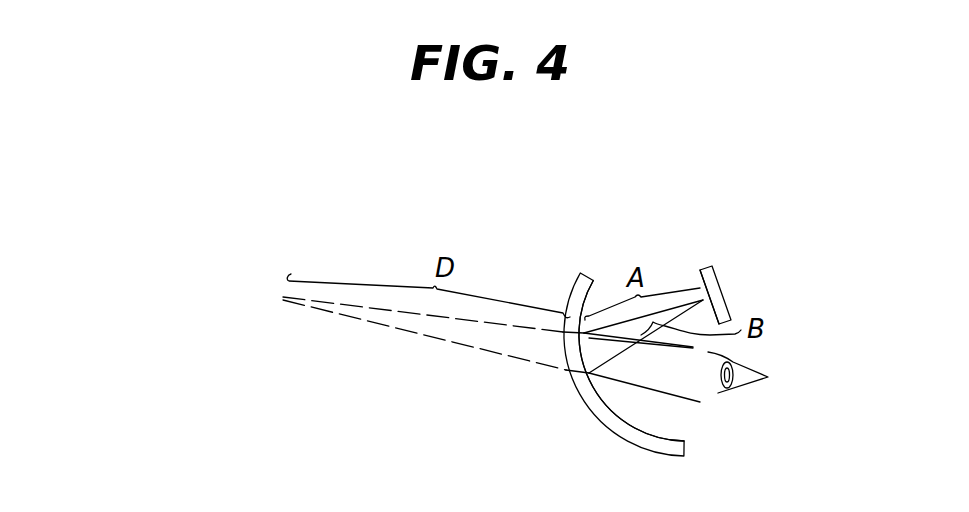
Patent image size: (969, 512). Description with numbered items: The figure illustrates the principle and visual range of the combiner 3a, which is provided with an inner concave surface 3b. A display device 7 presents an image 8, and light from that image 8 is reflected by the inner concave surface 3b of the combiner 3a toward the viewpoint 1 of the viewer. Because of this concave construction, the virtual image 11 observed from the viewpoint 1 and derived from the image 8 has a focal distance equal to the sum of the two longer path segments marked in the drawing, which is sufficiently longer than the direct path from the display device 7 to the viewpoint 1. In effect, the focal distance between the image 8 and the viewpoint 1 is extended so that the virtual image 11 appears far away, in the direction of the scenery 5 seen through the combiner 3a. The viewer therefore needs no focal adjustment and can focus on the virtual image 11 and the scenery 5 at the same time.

The viewpoint 1 is at (768, 377).
The combiner 3a is at (580, 410).
The inner concave surface 3b is at (647, 433).
The scenery 5 is at (232, 268).
The display device 7 is at (722, 297).
The image 8 is at (702, 290).
The virtual image 11 is at (288, 315).